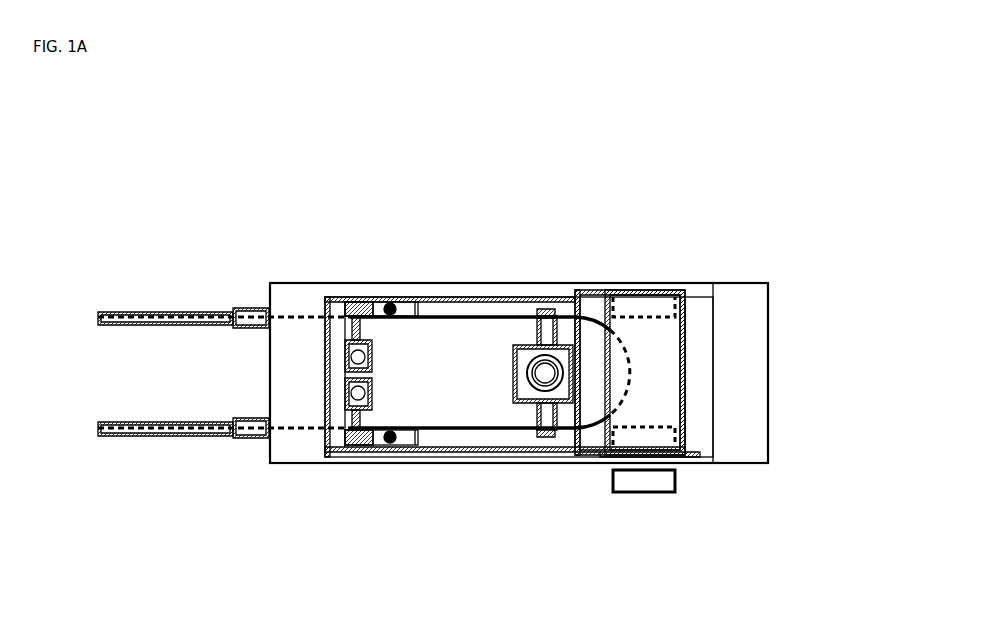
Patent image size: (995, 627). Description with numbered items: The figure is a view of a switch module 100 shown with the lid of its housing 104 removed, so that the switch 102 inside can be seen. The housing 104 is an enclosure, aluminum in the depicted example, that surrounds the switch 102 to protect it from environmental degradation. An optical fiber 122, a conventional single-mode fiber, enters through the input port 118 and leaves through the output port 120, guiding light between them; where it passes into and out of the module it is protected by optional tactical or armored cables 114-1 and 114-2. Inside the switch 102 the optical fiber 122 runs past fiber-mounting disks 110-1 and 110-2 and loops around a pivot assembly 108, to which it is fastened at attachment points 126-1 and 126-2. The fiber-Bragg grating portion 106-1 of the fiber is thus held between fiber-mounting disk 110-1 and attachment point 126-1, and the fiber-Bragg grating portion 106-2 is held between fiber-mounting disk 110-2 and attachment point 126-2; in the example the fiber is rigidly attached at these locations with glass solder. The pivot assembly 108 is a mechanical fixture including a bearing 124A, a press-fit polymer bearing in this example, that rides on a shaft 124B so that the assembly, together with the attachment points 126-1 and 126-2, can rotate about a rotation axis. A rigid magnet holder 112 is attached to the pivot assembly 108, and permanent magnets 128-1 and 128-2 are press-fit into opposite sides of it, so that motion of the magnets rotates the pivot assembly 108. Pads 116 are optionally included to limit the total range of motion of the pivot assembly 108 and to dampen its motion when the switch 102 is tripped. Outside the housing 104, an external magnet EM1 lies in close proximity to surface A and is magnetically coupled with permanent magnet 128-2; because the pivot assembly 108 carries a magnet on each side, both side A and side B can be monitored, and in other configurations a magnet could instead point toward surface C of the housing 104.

The switch module 100 is at (138, 183).
The switch 102 is at (448, 464).
The housing 104 is at (772, 444).
The fiber-Bragg grating portion 106-1 is at (448, 314).
The fiber-Bragg grating portion 106-2 is at (501, 431).
The pivot assembly 108 is at (490, 358).
The fiber-mounting disk 110-1 is at (354, 312).
The fiber-mounting disk 110-2 is at (354, 434).
The magnet holder 112 is at (688, 370).
The cable 114-1 is at (158, 311).
The cable 114-2 is at (210, 437).
The pad 116 is at (691, 286).
The input port 118 is at (88, 317).
The output port 120 is at (88, 428).
The optical fiber 122 is at (300, 314).
The bearing 124A is at (564, 357).
The shaft 124B is at (535, 356).
The attachment point 126-1 is at (550, 309).
The attachment point 126-2 is at (549, 439).
The permanent magnet 128-1 is at (679, 307).
The permanent magnet 128-2 is at (666, 425).
The external magnet EM1 is at (660, 480).
The surface A is at (691, 473).
The side B is at (634, 268).
The surface C is at (791, 370).